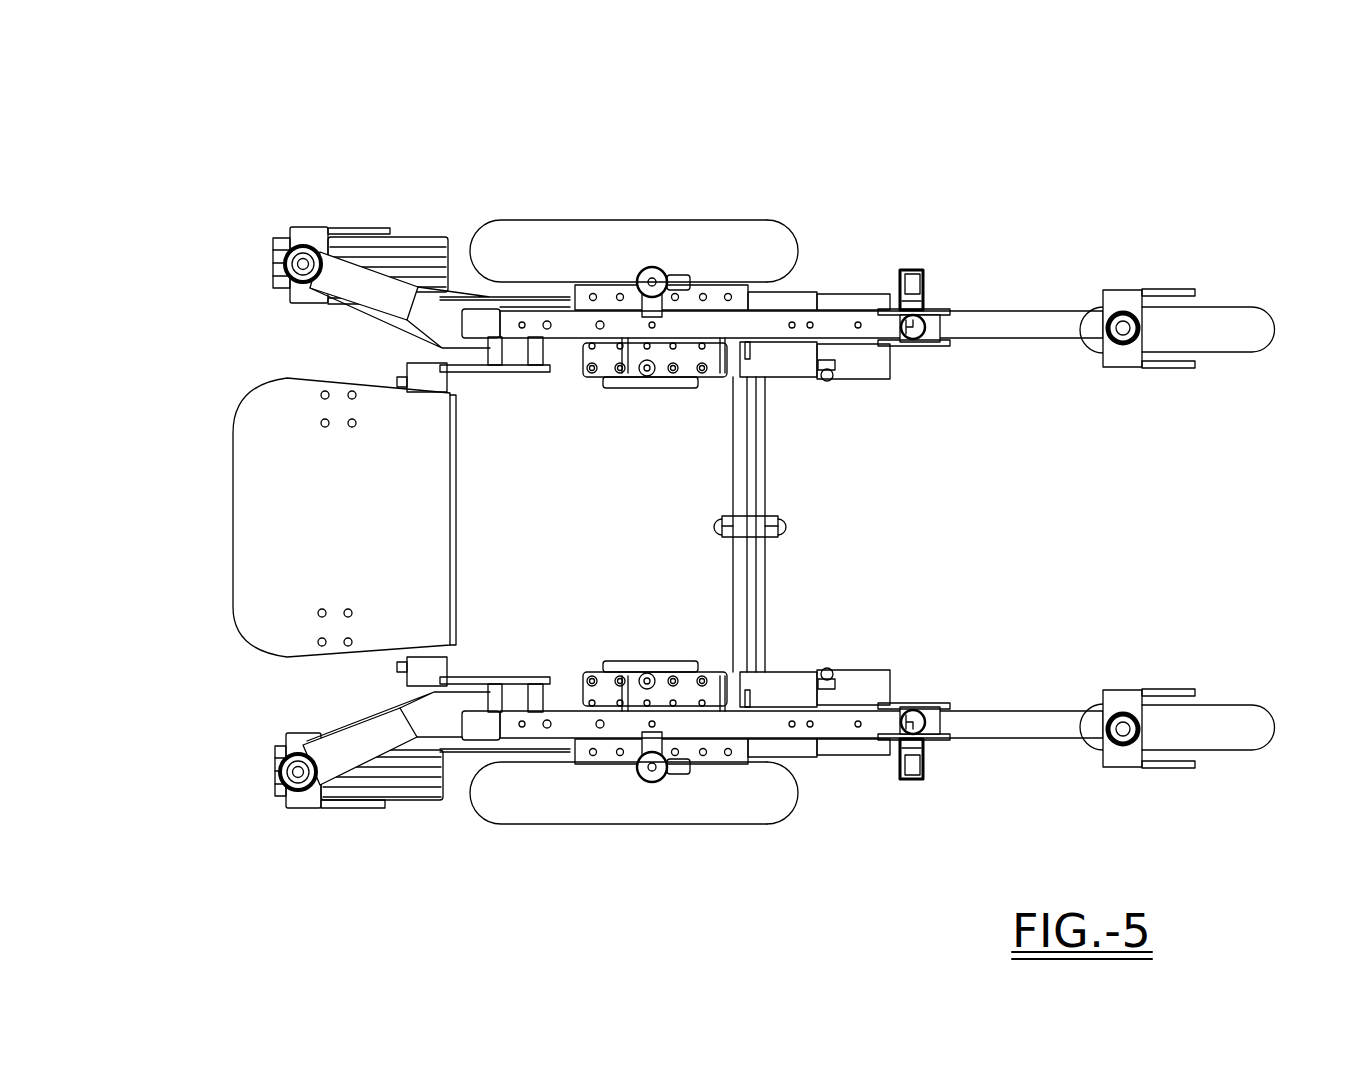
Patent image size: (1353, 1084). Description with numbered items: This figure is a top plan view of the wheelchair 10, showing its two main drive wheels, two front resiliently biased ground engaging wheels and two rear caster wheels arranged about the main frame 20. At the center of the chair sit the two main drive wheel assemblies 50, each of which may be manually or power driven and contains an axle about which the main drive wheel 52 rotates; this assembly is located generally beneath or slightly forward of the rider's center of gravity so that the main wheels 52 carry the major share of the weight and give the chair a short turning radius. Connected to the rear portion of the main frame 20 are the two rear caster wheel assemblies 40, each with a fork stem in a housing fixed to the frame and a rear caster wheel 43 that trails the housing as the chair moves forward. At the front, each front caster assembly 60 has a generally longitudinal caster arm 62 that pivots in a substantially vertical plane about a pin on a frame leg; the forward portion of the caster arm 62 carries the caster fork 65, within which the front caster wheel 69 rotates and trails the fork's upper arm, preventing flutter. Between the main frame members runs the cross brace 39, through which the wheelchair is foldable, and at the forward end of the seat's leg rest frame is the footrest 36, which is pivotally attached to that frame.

The wheelchair 10 is at (946, 186).
The main frame 20 is at (983, 342).
The footrest 36 is at (466, 519).
The cross brace 39 is at (732, 584).
The rear caster wheel assembly 40 is at (1192, 272).
The rear caster wheel 43 is at (1258, 352).
The main drive wheel assembly 50 is at (646, 220).
The main drive wheel 52 is at (792, 234).
The front caster assembly 60 is at (352, 216).
The caster arm 62 is at (353, 314).
The caster fork 65 is at (299, 221).
The front caster wheel 69 is at (273, 258).